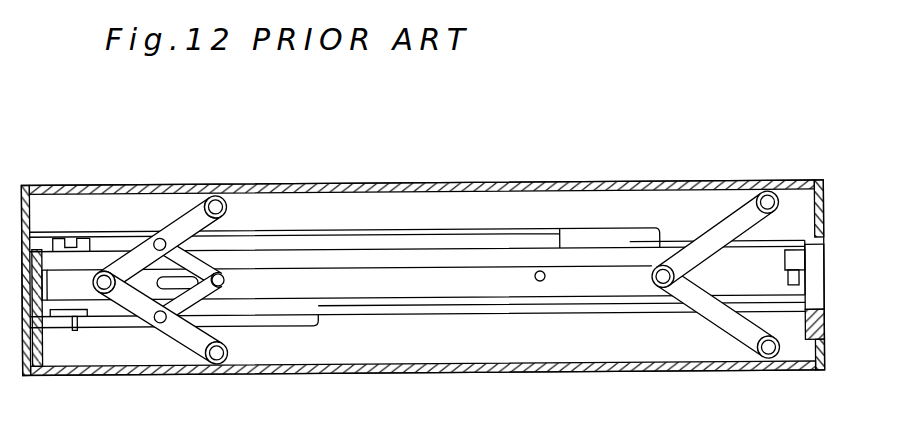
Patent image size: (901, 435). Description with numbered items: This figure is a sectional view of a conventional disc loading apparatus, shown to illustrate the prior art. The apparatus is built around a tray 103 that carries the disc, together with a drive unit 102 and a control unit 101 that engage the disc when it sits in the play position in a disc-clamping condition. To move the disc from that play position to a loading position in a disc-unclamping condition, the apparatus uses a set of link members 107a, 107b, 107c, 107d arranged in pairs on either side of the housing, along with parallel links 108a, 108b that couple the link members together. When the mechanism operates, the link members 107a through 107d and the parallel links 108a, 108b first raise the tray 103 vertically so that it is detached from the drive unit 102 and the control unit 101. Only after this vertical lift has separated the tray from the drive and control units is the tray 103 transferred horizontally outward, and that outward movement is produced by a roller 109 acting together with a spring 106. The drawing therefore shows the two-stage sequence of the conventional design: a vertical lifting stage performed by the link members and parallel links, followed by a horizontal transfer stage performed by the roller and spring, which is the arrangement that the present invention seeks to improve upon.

The control unit 101 is at (682, 202).
The drive unit 102 is at (682, 342).
The tray 103 is at (815, 276).
The spring 106 is at (550, 236).
The link member 107a is at (195, 215).
The link member 107b is at (140, 305).
The link member 107c is at (739, 219).
The link member 107d is at (745, 329).
The parallel link 108a is at (203, 266).
The parallel link 108b is at (230, 309).
The roller 109 is at (797, 246).